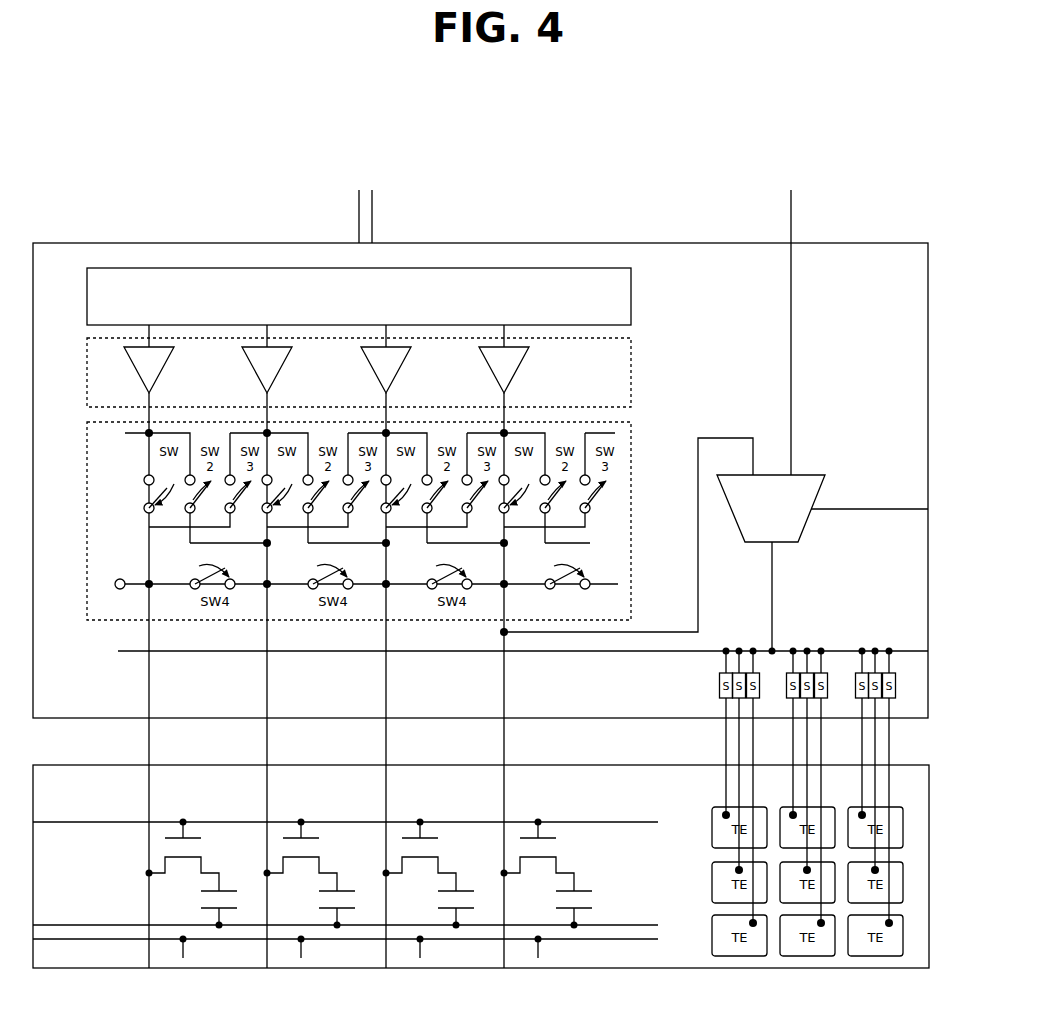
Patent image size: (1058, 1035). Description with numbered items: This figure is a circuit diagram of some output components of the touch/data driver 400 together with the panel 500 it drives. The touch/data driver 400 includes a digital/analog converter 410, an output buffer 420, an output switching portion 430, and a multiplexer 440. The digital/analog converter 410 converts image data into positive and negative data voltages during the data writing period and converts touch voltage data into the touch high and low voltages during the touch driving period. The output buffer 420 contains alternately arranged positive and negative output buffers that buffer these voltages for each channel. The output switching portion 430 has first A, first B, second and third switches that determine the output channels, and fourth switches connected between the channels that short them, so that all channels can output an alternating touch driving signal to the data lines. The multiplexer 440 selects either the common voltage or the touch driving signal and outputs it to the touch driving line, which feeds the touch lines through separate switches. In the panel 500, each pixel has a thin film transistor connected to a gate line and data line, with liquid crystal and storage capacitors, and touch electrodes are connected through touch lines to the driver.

The touch/data driver 400 is at (878, 243).
The digital/analog converter (DAC) 410 is at (631, 312).
The output buffer 420 is at (631, 366).
The output switching portion 430 is at (631, 478).
The multiplexer (MUX) 440 is at (810, 475).
The panel 500 is at (525, 968).